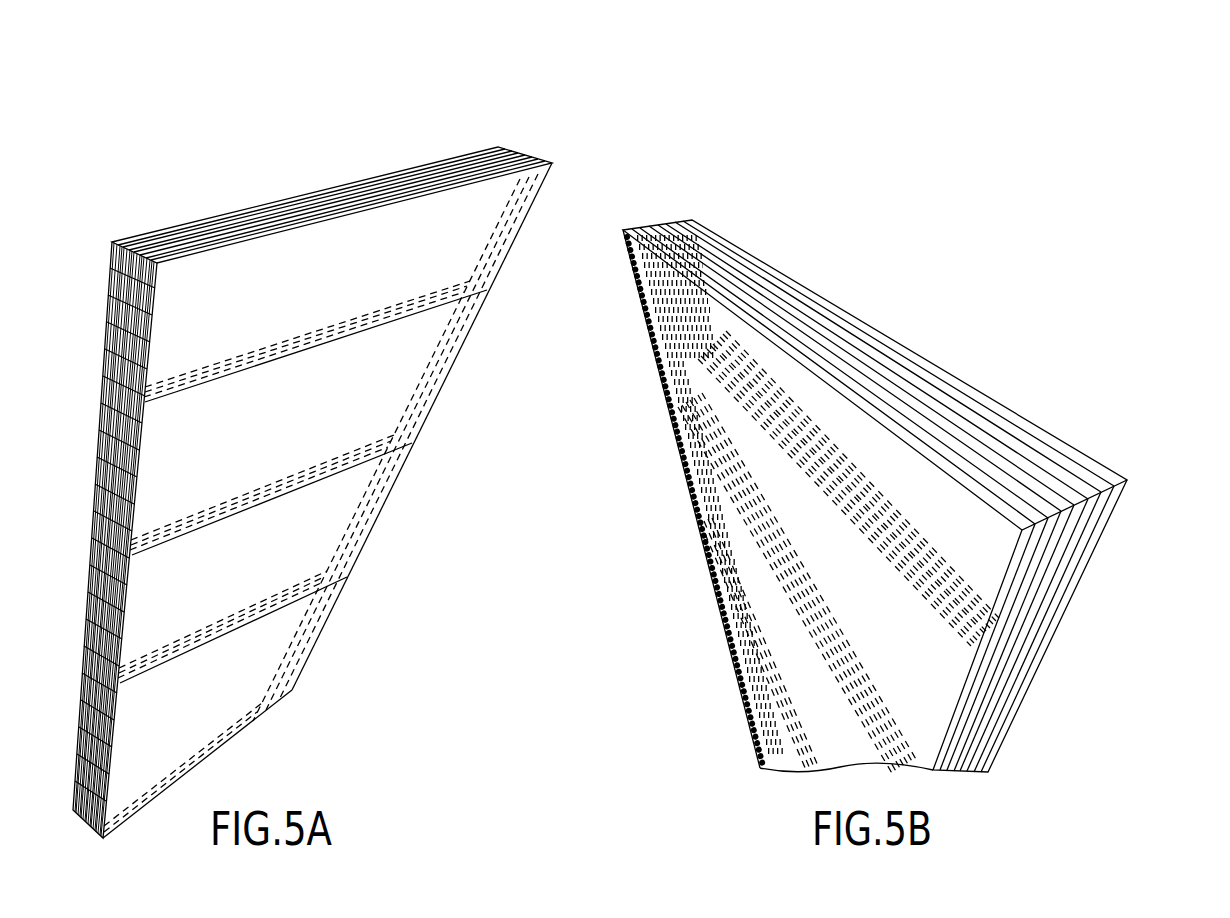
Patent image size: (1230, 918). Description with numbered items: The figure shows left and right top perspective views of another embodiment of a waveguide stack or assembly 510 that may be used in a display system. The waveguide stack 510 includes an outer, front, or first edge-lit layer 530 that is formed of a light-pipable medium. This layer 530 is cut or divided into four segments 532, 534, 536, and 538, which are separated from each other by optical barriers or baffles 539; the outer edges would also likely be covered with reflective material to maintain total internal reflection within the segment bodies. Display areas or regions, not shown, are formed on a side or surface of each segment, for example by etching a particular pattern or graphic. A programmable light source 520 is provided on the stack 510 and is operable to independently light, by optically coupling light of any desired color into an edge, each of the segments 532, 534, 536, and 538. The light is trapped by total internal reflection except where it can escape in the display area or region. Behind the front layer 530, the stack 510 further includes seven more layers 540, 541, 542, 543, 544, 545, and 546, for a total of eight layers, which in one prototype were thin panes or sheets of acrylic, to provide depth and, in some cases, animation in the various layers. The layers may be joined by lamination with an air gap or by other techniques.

In FIG. 5A, the waveguide stack 510 is at (200, 197).
In FIG. 5A, the programmable light source 520 is at (110, 456).
In FIG. 5B, the programmable light source 520 is at (640, 331).
In FIG. 5A, the first edge-lit layer 530 is at (300, 697).
In FIG. 5B, the first edge-lit layer 530 is at (775, 768).
In FIG. 5A, the segment 532 is at (300, 638).
In FIG. 5B, the segment 532 is at (757, 735).
In FIG. 5A, the segment 534 is at (362, 483).
In FIG. 5B, the segment 534 is at (840, 757).
In FIG. 5A, the segment 536 is at (405, 382).
In FIG. 5B, the segment 536 is at (930, 743).
In FIG. 5A, the segment 538 is at (470, 225).
In FIG. 5B, the segment 538 is at (843, 430).
In FIG. 5A, the optical barriers 539 is at (307, 483).
In FIG. 5B, the optical barriers 539 is at (948, 683).
In FIG. 5A, the layer 540 is at (556, 168).
In FIG. 5B, the layer 540 is at (1002, 638).
In FIG. 5A, the layer 541 is at (549, 159).
In FIG. 5B, the layer 541 is at (1018, 620).
In FIG. 5A, the layer 542 is at (537, 154).
In FIG. 5B, the layer 542 is at (1037, 600).
In FIG. 5A, the layer 543 is at (526, 151).
In FIG. 5B, the layer 543 is at (1052, 582).
In FIG. 5A, the layer 544 is at (516, 148).
In FIG. 5B, the layer 544 is at (1075, 558).
In FIG. 5A, the layer 545 is at (509, 146).
In FIG. 5B, the layer 545 is at (1098, 536).
In FIG. 5A, the layer 546 is at (500, 147).
In FIG. 5B, the layer 546 is at (1098, 457).